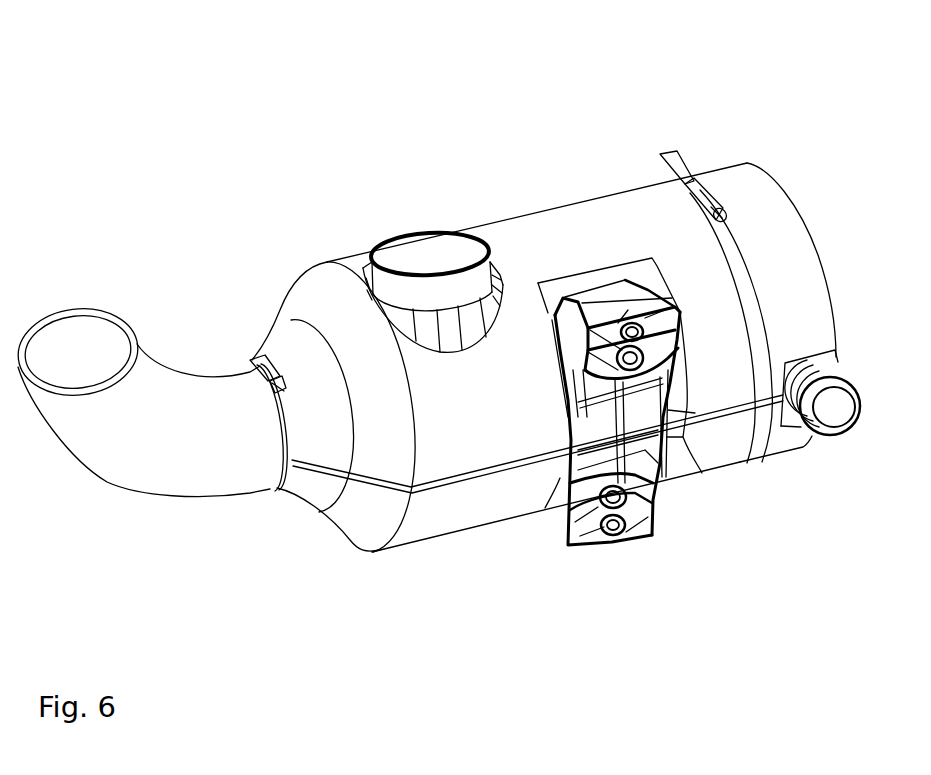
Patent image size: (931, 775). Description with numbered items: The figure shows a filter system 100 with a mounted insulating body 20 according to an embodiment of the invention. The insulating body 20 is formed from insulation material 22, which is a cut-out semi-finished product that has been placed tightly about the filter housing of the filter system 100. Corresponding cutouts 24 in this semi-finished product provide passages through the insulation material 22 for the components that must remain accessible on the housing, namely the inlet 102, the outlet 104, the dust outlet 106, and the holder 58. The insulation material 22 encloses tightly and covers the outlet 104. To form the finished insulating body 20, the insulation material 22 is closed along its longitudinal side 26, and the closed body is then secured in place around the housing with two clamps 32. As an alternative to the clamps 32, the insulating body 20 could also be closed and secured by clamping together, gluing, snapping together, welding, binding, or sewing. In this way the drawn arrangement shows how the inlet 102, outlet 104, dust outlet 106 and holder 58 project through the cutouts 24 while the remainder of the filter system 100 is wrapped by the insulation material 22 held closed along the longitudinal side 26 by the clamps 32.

The filter system 100 is at (257, 124).
The insulating body 20 is at (565, 220).
The insulation material 22 is at (537, 444).
The cutouts 24 is at (492, 262).
The longitudinal side 26 is at (463, 487).
The clamps 32 is at (698, 165).
The holder 58 is at (662, 517).
The inlet 102 is at (410, 243).
The outlet 104 is at (213, 376).
The dust outlet 106 is at (810, 436).